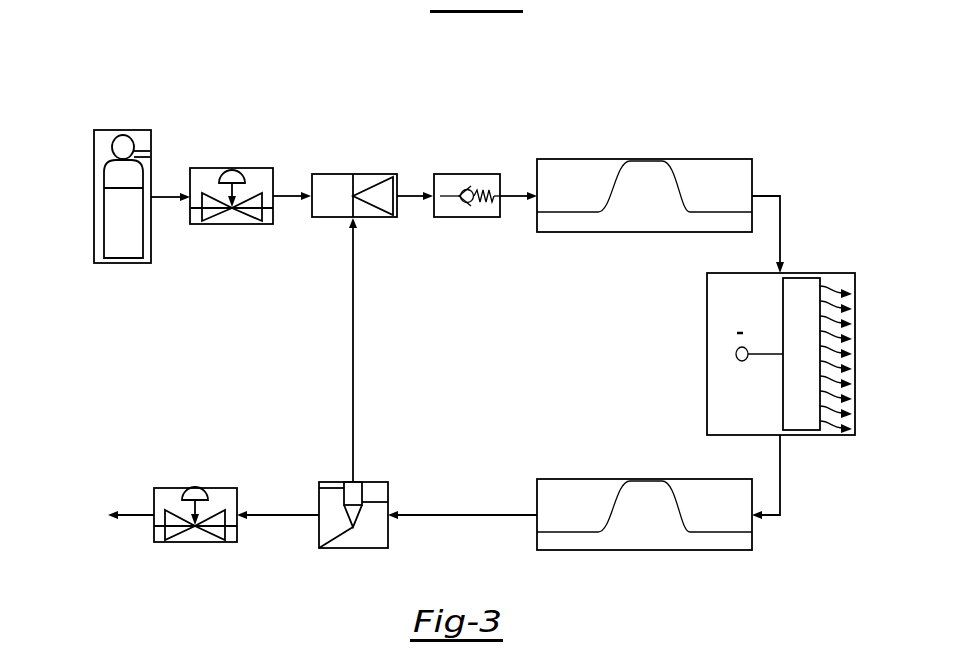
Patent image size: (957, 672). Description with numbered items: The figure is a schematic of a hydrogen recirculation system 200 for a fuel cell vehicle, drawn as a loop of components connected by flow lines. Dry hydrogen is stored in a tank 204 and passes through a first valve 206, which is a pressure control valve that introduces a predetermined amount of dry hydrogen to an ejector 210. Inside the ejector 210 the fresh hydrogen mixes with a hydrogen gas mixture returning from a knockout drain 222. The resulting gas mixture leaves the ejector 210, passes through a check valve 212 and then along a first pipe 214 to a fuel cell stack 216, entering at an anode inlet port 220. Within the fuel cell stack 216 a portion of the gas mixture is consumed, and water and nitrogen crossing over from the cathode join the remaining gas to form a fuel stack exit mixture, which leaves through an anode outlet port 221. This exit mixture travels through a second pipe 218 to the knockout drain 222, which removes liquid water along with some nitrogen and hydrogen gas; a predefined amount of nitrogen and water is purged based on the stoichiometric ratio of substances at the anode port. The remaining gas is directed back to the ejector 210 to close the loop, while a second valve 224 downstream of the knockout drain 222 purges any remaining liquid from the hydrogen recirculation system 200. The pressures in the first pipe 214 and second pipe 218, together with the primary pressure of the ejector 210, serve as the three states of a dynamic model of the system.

The hydrogen recirculation system 200 is at (190, 38).
The tank 204 is at (123, 130).
The first valve 206 is at (232, 168).
The ejector 210 is at (353, 174).
The check valve 212 is at (467, 174).
The first pipe 214 is at (575, 159).
The fuel cell stack 216 is at (825, 264).
The second pipe 218 is at (575, 479).
The anode inlet port 220 is at (777, 271).
The anode outlet port 221 is at (783, 437).
The knockout drain 222 is at (330, 482).
The second valve 224 is at (195, 488).